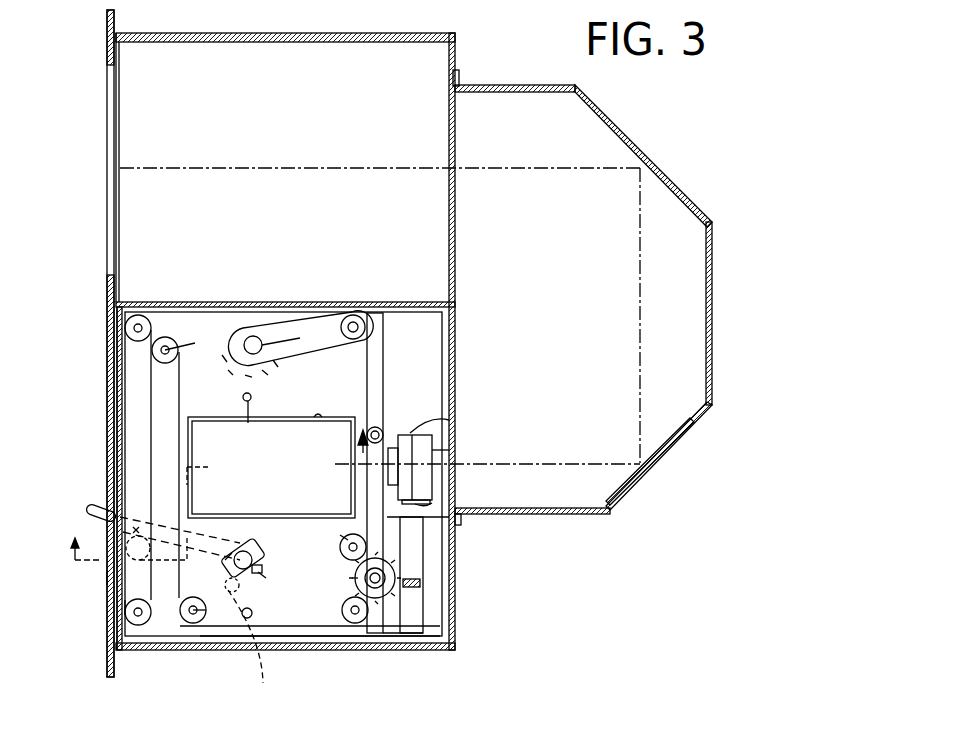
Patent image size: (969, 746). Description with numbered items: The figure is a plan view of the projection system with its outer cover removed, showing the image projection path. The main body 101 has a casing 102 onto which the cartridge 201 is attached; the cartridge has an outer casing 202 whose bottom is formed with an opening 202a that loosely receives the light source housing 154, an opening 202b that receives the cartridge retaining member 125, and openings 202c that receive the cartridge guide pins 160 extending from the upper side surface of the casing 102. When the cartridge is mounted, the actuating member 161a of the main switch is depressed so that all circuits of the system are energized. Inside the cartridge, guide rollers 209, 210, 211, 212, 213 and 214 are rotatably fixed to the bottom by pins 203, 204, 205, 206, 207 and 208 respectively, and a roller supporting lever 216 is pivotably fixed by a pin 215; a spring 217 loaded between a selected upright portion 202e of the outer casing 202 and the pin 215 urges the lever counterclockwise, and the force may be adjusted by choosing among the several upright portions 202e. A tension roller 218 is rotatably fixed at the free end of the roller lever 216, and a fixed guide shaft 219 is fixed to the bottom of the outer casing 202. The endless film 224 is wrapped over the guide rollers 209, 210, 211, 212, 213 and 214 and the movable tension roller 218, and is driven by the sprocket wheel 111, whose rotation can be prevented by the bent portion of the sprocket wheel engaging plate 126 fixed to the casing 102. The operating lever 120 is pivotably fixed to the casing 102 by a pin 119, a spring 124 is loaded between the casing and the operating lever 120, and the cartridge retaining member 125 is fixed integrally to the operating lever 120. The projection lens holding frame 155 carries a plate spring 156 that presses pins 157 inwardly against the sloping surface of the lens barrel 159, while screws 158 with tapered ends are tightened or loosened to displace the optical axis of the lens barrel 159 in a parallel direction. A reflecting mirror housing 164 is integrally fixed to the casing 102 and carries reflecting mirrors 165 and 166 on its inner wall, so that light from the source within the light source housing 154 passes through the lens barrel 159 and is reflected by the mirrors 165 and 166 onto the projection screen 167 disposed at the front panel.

The main body 101 is at (457, 600).
The casing 102 is at (396, 651).
The projection screen 167 is at (107, 124).
The guide roller 214 is at (117, 326).
The reflecting mirror 166 is at (670, 192).
The reflecting mirror 165 is at (657, 445).
The reflecting mirror housing 164 is at (583, 514).
The pin 208 is at (140, 314).
The guide roller 212 is at (152, 351).
The pin 206 is at (199, 331).
The pin 207 is at (138, 625).
The guide roller 213 is at (125, 615).
The guide roller 211 is at (193, 623).
The pin 205 is at (199, 620).
The roller supporting lever 216 is at (300, 318).
The pin 215 is at (295, 340).
The spring 217 is at (250, 335).
The tension roller 218 is at (358, 313).
The upright portion 202e is at (235, 378).
The cartridge guide pins 160 is at (258, 390).
The endless film 224 is at (385, 336).
The light source housing 154 is at (282, 484).
The opening 202a is at (318, 416).
The openings 202c is at (277, 523).
The fixed guide shaft 219 is at (339, 451).
The plate spring 156 is at (407, 434).
The lens barrel 159 is at (393, 430).
The projection lens holding frame 155 is at (441, 423).
The pins 157 is at (440, 450).
The screws 158 is at (432, 503).
The pin 203 is at (341, 544).
The guide roller 209 is at (348, 537).
The guide roller 210 is at (378, 600).
The pin 204 is at (345, 622).
The sprocket wheel engaging plate 126 is at (407, 577).
The outer casing 202 is at (238, 552).
The opening 202b is at (258, 560).
The cartridge retaining member 125 is at (285, 585).
The sprocket wheel 111 is at (352, 578).
The pin 119 is at (225, 560).
The cartridge 201 is at (276, 637).
The actuating member 161a is at (262, 648).
The operating lever 120 is at (95, 506).
The spring 124 is at (107, 577).